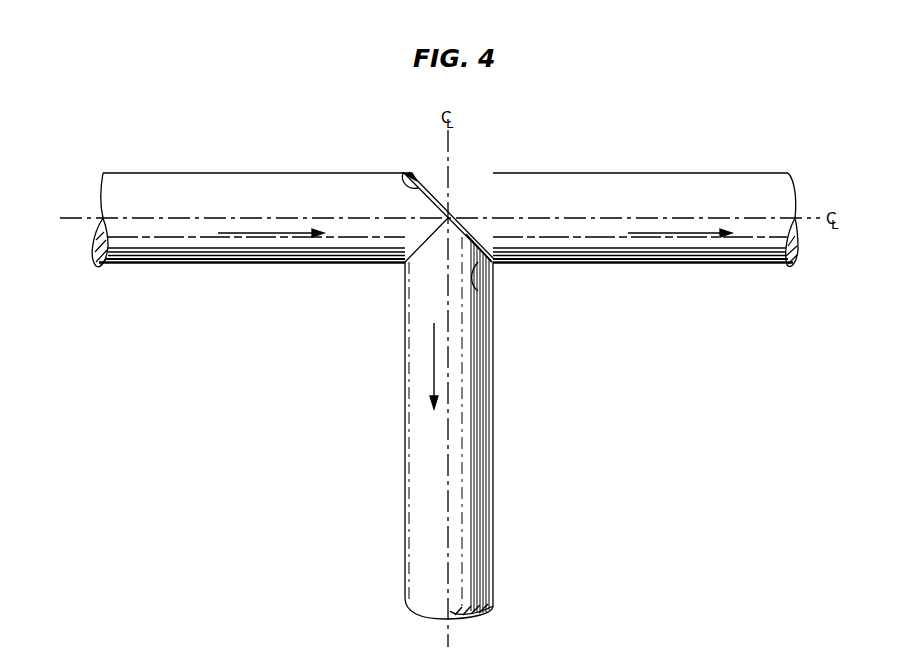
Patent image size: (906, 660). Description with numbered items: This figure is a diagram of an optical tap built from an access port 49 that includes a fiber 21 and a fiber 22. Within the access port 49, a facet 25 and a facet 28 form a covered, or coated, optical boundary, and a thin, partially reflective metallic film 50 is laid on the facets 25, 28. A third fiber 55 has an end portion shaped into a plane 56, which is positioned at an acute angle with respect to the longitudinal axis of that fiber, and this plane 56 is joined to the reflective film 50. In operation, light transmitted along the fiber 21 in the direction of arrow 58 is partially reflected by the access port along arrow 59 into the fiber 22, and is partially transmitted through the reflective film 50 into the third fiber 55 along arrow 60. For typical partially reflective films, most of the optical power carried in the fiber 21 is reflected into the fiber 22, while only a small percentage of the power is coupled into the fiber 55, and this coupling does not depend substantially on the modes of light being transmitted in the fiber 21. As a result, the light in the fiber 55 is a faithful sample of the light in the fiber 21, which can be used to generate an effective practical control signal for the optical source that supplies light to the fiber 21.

The fiber 21 is at (247, 236).
The fiber 22 is at (419, 520).
The facet 25 is at (408, 176).
The facet 28 is at (478, 291).
The access port 49 is at (336, 409).
The partially reflective metallic film 50 is at (463, 233).
The third fiber 55 is at (720, 184).
The plane 56 is at (479, 248).
The arrow 58 is at (278, 233).
The arrow 59 is at (434, 356).
The arrow 60 is at (655, 233).